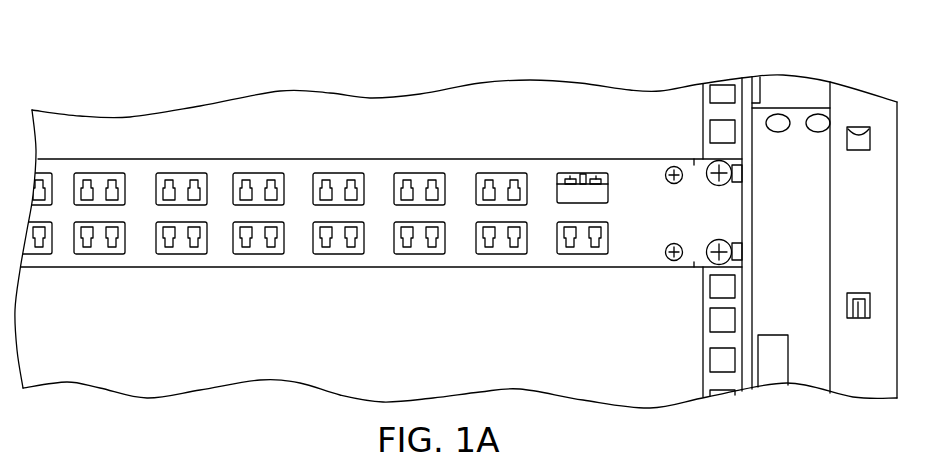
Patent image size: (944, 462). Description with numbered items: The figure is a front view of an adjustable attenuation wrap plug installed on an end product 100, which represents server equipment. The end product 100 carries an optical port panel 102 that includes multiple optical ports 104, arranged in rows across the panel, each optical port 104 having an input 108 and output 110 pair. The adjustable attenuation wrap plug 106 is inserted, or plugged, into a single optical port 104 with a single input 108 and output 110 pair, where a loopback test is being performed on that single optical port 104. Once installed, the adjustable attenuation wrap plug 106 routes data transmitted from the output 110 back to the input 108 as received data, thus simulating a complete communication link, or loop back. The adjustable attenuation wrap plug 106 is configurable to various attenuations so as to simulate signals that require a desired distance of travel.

The end product 100 is at (140, 61).
The optical port panel 102 is at (302, 150).
The optical ports 104 is at (557, 173).
The adjustable attenuation wrap plug 106 is at (600, 197).
The input 108 is at (571, 178).
The output 110 is at (596, 177).